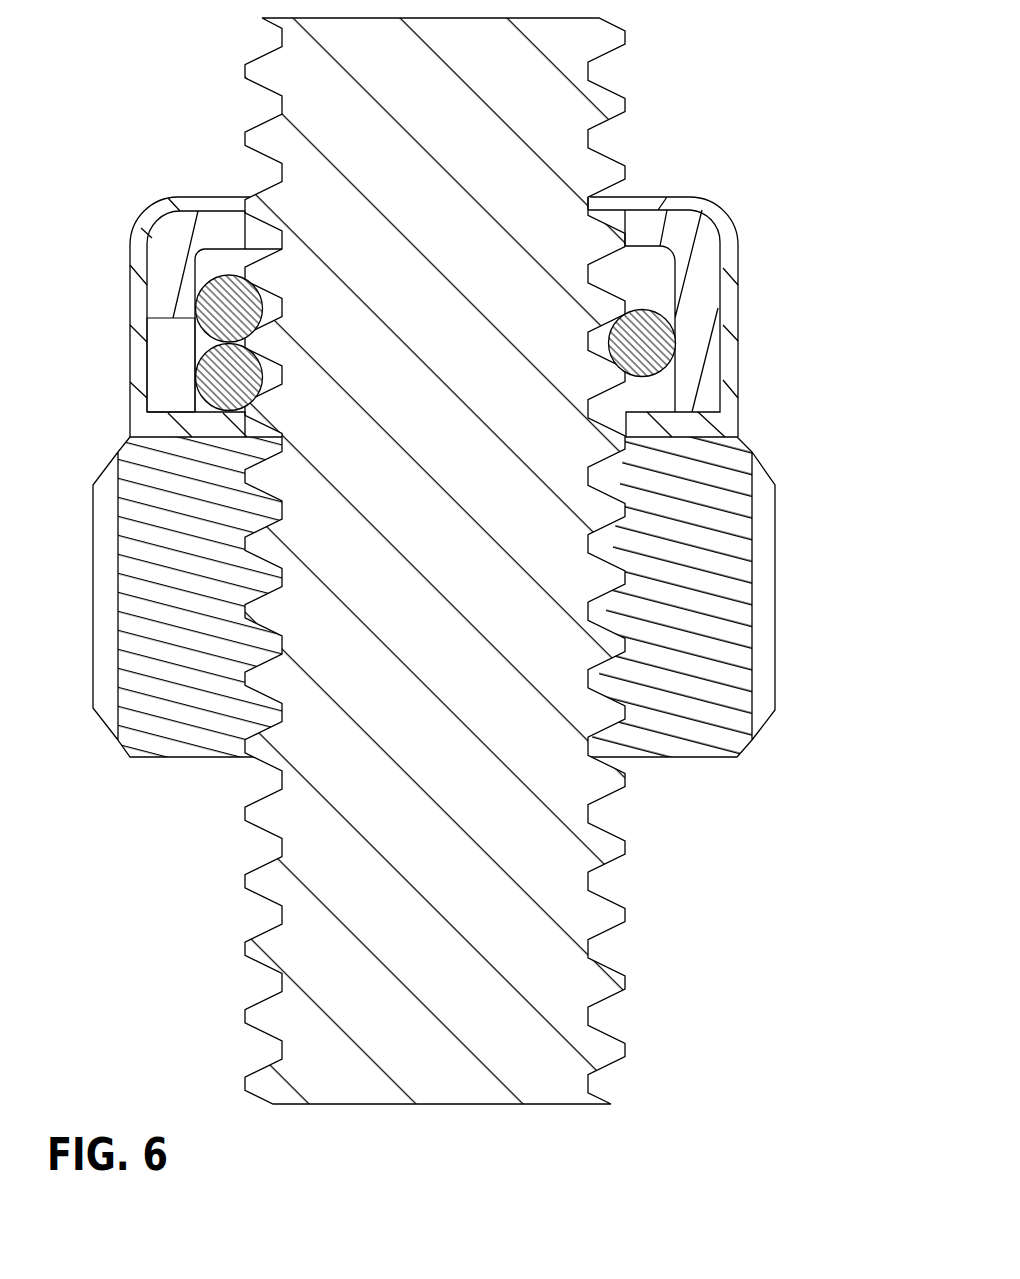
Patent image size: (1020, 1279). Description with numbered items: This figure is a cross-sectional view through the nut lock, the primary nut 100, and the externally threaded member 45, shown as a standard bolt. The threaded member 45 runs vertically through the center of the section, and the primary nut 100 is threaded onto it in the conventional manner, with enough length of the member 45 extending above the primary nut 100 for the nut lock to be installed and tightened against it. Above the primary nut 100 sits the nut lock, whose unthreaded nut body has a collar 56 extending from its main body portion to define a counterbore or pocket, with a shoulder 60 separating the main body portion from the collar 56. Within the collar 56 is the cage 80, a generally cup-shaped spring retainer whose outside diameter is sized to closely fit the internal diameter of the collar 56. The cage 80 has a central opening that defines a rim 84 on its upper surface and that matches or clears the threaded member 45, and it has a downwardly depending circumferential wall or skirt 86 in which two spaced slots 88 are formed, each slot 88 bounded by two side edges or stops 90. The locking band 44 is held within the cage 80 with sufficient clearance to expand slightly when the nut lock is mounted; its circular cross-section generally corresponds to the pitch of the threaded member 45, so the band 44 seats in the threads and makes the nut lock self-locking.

The locking band 44 is at (660, 373).
The externally threaded member 45 is at (623, 897).
The collar 56 is at (704, 197).
The shoulder 60 is at (155, 434).
The cage 80 is at (724, 257).
The rim 84 is at (218, 209).
The skirt 86 is at (703, 298).
The slot 88 is at (180, 374).
The stop 90 is at (165, 340).
The primary nut 100 is at (770, 555).